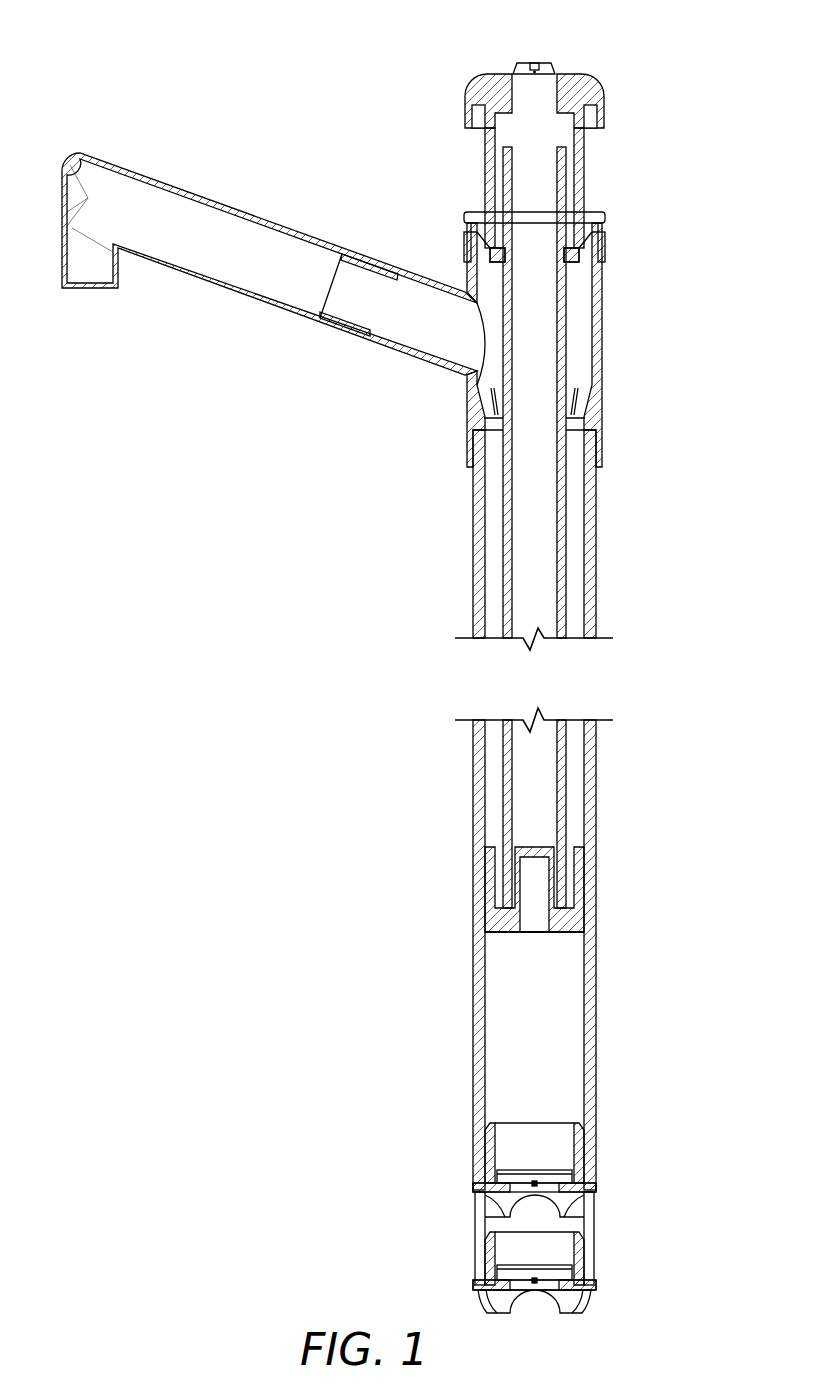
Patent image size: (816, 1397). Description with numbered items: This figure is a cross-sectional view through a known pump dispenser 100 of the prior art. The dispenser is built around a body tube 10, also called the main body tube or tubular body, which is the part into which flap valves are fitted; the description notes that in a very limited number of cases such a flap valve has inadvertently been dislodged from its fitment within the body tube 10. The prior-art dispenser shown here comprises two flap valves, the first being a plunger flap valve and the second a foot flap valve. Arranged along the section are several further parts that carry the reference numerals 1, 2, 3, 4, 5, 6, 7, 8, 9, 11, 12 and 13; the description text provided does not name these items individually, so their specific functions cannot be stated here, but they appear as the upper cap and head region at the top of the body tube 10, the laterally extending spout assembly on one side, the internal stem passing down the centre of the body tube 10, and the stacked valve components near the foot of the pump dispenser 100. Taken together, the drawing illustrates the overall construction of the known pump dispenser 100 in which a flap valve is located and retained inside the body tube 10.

The knob 1 is at (535, 68).
The cap 2 is at (477, 82).
The ring 3 is at (597, 212).
The flange 4 is at (607, 247).
The cone seat 5 is at (590, 262).
The stem 6 is at (544, 361).
The piston 7 is at (563, 882).
The upper valve 8 is at (585, 1153).
The valve plate 9 is at (493, 1172).
The body tube 10 is at (596, 1212).
The lower valve 11 is at (481, 1270).
The spout insert 12 is at (416, 366).
The spout 13 is at (171, 232).
The pump dispenser 100 is at (383, 465).